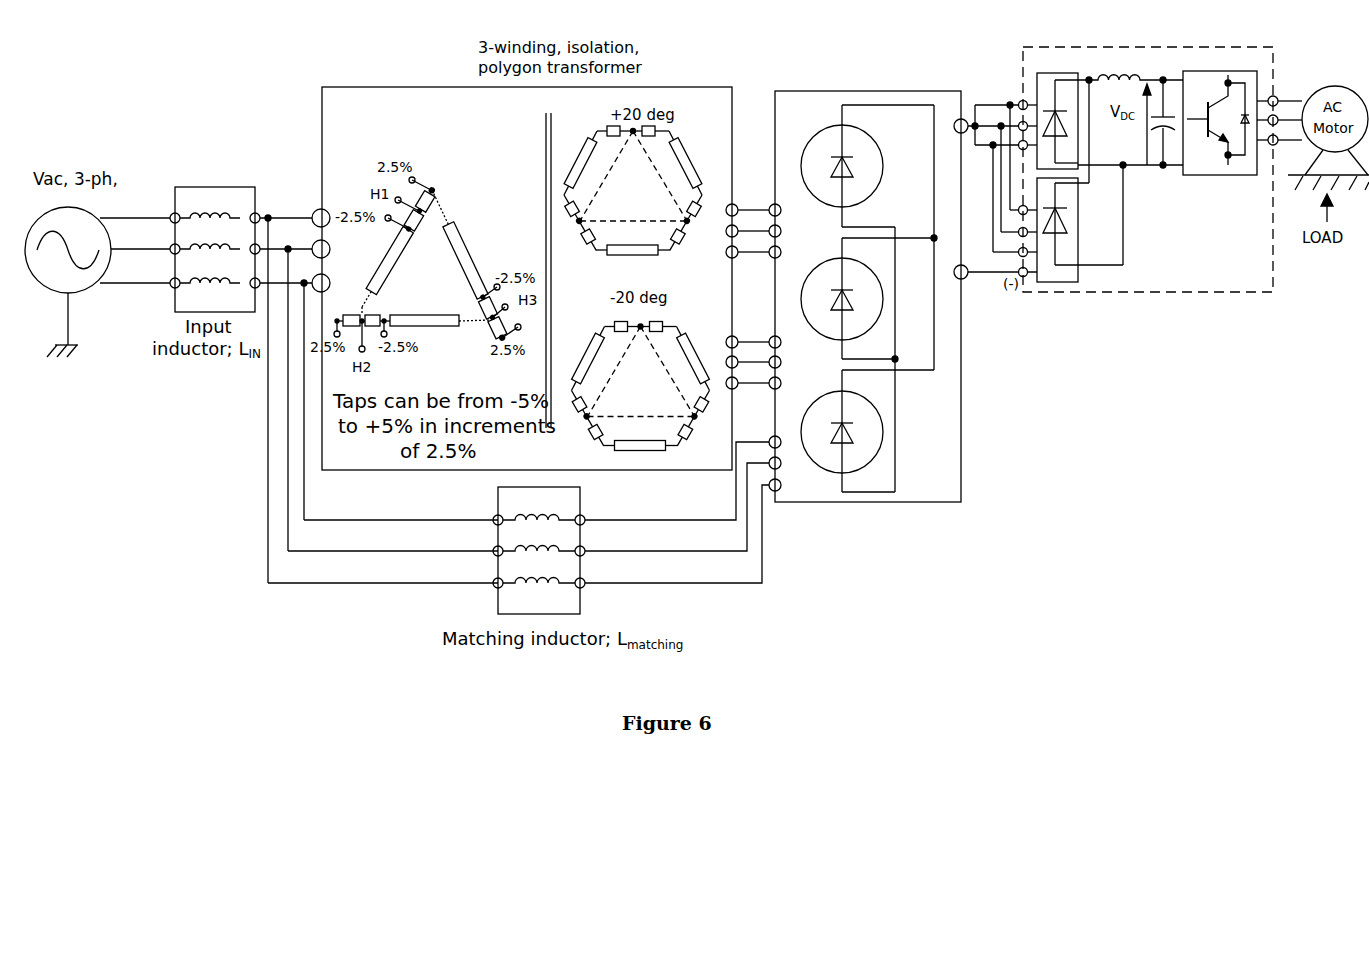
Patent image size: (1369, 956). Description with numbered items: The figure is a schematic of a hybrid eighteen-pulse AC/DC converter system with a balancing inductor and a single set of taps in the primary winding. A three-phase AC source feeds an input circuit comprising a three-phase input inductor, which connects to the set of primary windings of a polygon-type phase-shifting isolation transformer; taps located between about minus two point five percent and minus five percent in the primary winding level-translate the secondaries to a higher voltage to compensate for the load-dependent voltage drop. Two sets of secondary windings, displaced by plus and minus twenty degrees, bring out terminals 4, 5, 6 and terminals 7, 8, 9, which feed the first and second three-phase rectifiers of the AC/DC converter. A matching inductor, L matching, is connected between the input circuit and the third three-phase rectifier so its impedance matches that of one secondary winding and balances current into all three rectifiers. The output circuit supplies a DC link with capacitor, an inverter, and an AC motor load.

The secondary winding terminal 4 (+20 deg polygon) 4 is at (682, 165).
The secondary winding terminal 5 (+20 deg polygon) 5 is at (685, 243).
The secondary winding terminal 6 (+20 deg polygon) 6 is at (743, 222).
The secondary winding terminal 7 (-20 deg polygon) 7 is at (728, 326).
The secondary winding terminal 8 (-20 deg polygon) 8 is at (726, 406).
The secondary winding terminal 9 (-20 deg polygon) 9 is at (668, 384).